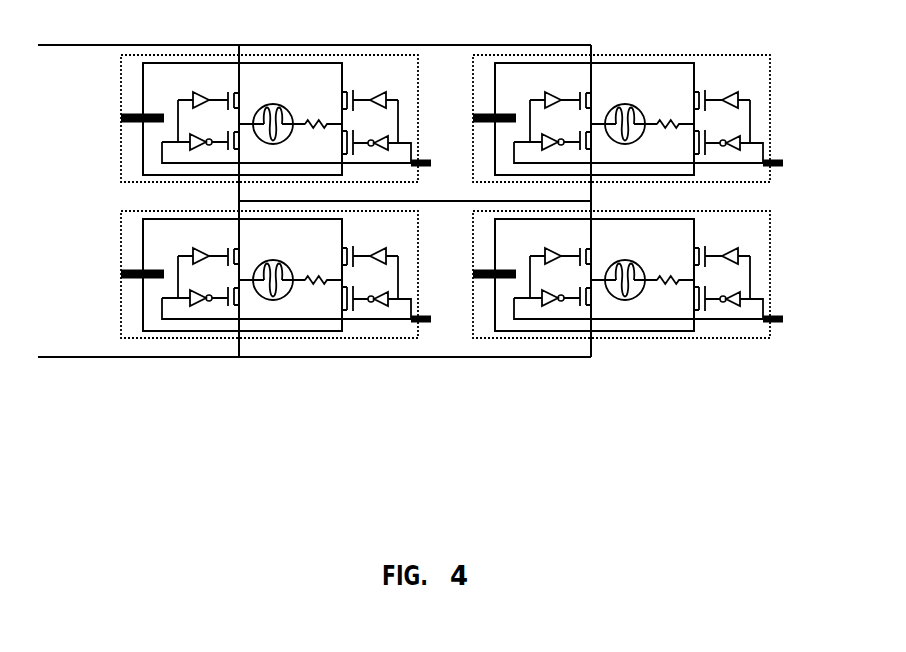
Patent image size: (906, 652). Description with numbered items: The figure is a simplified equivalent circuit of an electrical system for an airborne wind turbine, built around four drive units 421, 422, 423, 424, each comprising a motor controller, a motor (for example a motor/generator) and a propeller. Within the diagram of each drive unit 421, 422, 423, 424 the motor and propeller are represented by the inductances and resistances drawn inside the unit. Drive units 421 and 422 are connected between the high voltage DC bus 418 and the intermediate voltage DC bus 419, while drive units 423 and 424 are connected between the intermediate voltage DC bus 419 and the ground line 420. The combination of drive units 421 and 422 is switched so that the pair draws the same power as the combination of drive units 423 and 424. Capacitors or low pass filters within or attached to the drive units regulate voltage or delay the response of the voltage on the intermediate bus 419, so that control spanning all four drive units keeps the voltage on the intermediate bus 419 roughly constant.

The high voltage DC bus 418 is at (283, 39).
The intermediate voltage DC bus 419 is at (481, 201).
The ground line 420 is at (274, 358).
The drive unit 421 is at (121, 71).
The drive unit 422 is at (473, 71).
The drive unit 423 is at (122, 224).
The drive unit 424 is at (474, 224).